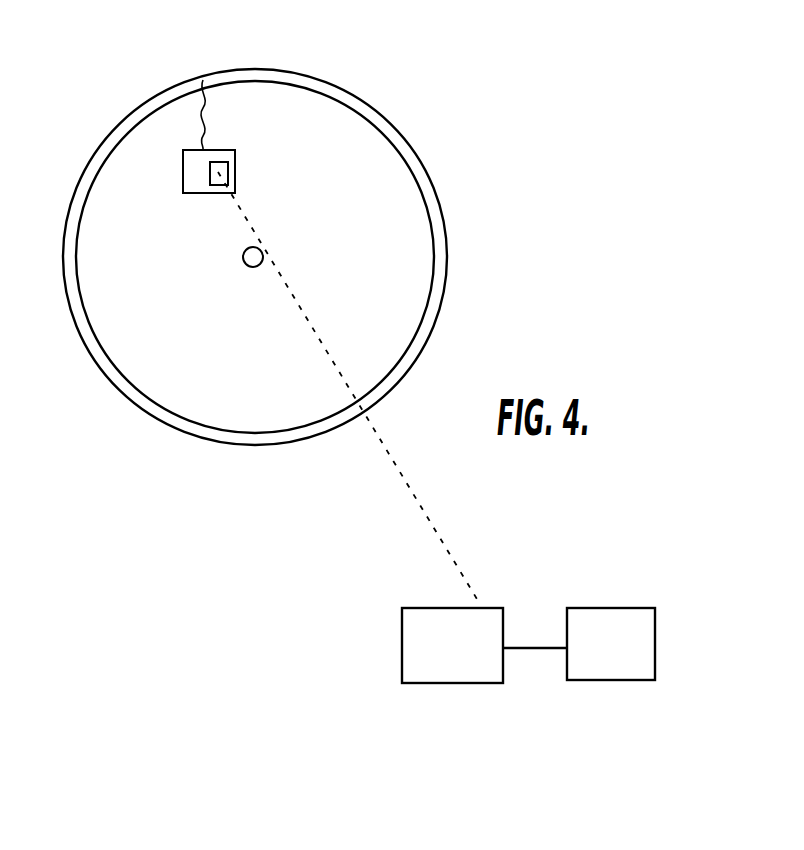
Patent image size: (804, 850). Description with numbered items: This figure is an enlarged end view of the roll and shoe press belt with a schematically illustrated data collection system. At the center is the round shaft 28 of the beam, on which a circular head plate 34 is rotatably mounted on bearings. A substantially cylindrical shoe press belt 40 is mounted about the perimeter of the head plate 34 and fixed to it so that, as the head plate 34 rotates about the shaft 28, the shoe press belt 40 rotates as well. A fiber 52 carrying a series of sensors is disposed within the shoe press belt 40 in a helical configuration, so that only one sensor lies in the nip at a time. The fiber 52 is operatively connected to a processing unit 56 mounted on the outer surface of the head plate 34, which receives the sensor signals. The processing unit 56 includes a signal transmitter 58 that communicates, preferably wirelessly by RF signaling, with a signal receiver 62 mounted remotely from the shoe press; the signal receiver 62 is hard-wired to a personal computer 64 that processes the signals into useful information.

The round shaft 28 is at (263, 255).
The circular head plate 34 is at (410, 193).
The shoe press belt 40 is at (440, 222).
The fiber 52 is at (207, 112).
The processing unit 56 is at (232, 155).
The signal transmitter 58 is at (312, 132).
The signal receiver 62 is at (445, 668).
The personal computer 64 is at (614, 665).